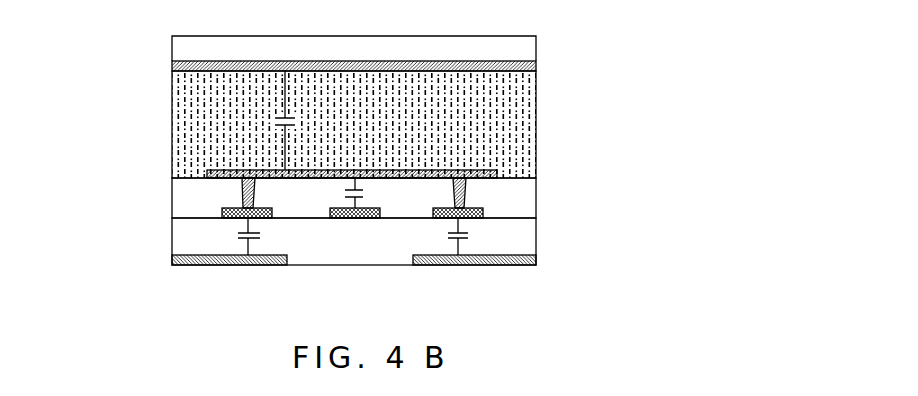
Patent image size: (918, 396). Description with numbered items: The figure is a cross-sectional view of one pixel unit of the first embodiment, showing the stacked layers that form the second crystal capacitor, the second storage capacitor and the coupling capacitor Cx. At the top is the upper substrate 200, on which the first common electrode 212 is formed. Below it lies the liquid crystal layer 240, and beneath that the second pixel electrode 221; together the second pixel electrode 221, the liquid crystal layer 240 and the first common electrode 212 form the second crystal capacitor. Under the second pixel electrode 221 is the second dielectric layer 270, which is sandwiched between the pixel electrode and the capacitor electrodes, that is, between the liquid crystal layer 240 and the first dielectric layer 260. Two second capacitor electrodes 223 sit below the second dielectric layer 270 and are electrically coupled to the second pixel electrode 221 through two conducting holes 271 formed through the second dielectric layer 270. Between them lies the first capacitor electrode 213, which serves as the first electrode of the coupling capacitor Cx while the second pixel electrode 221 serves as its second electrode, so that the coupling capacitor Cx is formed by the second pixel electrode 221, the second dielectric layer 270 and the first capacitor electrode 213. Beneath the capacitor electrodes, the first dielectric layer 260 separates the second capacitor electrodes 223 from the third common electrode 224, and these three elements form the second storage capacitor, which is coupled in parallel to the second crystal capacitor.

The upper substrate 200 is at (532, 50).
The first common electrode 212 is at (172, 65).
The liquid crystal layer 240 is at (532, 118).
The second pixel electrode 221 is at (207, 174).
The conducting hole 271 is at (467, 192).
The second dielectric layer 270 is at (532, 192).
The second capacitor electrode 223 is at (222, 212).
The first capacitor electrode 213 is at (337, 219).
The first dielectric layer 260 is at (532, 240).
The third common electrode 224 is at (172, 260).